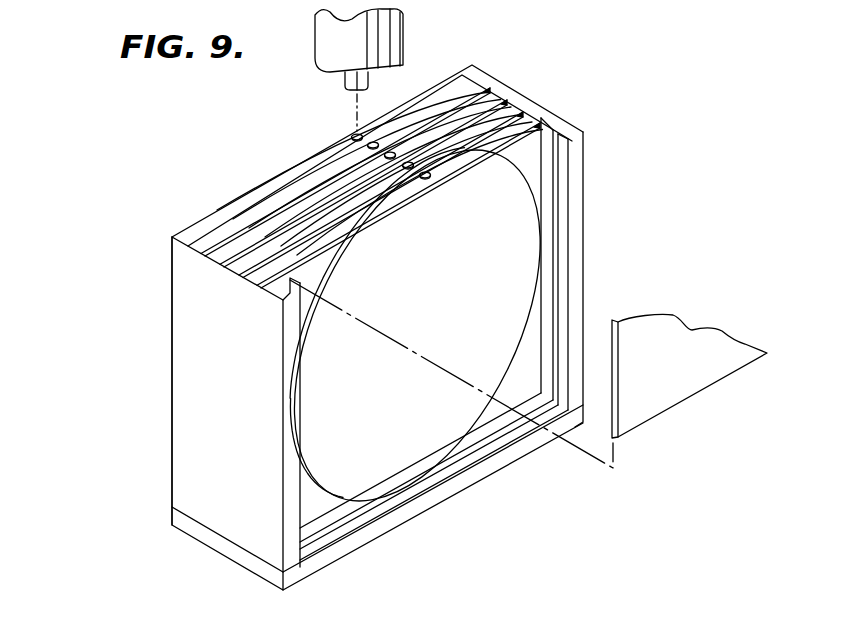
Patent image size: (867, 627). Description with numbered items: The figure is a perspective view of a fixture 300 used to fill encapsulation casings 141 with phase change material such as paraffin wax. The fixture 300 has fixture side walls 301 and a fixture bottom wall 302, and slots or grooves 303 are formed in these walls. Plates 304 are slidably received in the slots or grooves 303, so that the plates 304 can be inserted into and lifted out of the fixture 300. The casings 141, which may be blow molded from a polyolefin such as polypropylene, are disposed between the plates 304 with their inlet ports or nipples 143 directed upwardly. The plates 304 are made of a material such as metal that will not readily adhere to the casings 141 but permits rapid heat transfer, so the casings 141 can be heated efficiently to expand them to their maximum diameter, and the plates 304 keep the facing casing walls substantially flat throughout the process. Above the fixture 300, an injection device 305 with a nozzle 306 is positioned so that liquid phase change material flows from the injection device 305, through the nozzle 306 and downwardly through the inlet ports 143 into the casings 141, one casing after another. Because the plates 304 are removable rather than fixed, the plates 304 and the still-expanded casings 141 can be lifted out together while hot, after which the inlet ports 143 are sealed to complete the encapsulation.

The fixture 300 is at (173, 383).
The fixture side walls 301 is at (176, 472).
The fixture bottom wall 302 is at (478, 480).
The slots or grooves 303 is at (283, 294).
The plates 304 is at (495, 86).
The injection device 305 is at (404, 36).
The nozzle 306 is at (348, 86).
The inlet ports or nipples 143 is at (350, 136).
The casings 141 is at (523, 268).